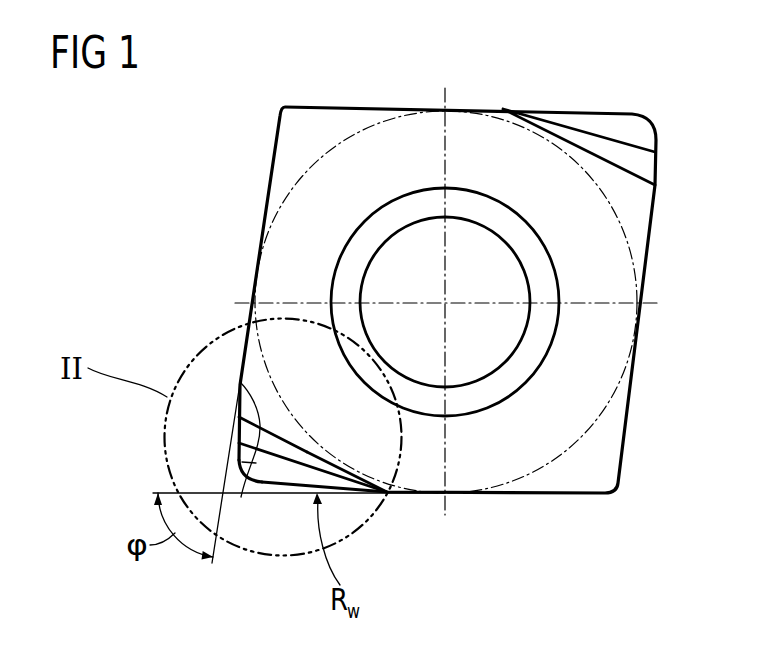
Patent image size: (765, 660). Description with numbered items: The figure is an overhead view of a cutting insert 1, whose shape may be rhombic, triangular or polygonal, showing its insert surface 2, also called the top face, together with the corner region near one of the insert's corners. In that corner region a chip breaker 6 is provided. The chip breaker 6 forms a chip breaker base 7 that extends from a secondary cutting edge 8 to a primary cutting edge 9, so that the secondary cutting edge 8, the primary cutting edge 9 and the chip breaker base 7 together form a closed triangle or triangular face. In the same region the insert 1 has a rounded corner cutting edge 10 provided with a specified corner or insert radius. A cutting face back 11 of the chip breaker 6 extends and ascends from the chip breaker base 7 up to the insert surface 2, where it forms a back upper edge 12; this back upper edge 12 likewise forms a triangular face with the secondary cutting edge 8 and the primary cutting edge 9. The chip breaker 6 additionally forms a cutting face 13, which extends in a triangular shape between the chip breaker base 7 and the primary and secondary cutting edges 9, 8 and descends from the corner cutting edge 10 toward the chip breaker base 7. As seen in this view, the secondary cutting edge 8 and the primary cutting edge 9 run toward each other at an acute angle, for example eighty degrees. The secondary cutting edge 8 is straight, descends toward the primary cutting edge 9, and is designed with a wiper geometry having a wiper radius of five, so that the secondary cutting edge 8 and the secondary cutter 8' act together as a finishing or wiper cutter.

The insert 1 is at (503, 108).
The insert surface 2 is at (372, 168).
The chip breaker 6 is at (240, 415).
The chip breaker base 7 is at (268, 472).
The secondary cutting edge 8 is at (299, 536).
The secondary cutter 8' is at (297, 568).
The primary cutting edge 9 is at (238, 443).
The corner cutting edge 10 is at (241, 497).
The cutting face back 11 is at (240, 382).
The back upper edge 12 is at (307, 452).
The cutting face 13 is at (242, 462).